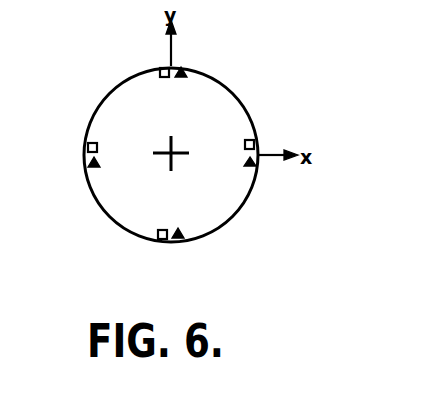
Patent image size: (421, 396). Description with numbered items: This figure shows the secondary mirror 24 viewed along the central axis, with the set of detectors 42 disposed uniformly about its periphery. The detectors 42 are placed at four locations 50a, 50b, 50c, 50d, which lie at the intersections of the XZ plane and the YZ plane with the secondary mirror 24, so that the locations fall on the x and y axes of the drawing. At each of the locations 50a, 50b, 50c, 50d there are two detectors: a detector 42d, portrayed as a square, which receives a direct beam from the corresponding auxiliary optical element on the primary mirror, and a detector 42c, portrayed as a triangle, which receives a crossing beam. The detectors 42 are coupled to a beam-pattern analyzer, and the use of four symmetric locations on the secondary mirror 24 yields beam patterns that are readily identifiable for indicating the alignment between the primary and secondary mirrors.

The secondary mirror 24 is at (95, 103).
The detectors 42 is at (78, 174).
The detectors receiving crossing beams 42c is at (187, 68).
The detectors receiving direct beams 42d is at (158, 72).
The detector location 50a is at (174, 64).
The detector location 50b is at (84, 160).
The detector location 50c is at (164, 242).
The detector location 50d is at (258, 143).